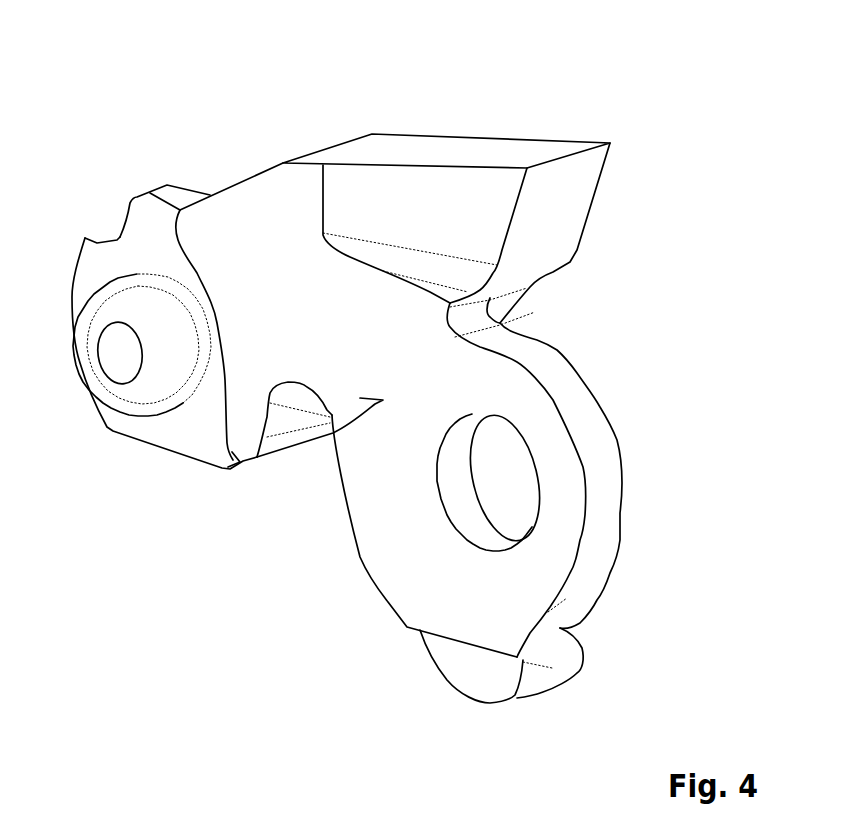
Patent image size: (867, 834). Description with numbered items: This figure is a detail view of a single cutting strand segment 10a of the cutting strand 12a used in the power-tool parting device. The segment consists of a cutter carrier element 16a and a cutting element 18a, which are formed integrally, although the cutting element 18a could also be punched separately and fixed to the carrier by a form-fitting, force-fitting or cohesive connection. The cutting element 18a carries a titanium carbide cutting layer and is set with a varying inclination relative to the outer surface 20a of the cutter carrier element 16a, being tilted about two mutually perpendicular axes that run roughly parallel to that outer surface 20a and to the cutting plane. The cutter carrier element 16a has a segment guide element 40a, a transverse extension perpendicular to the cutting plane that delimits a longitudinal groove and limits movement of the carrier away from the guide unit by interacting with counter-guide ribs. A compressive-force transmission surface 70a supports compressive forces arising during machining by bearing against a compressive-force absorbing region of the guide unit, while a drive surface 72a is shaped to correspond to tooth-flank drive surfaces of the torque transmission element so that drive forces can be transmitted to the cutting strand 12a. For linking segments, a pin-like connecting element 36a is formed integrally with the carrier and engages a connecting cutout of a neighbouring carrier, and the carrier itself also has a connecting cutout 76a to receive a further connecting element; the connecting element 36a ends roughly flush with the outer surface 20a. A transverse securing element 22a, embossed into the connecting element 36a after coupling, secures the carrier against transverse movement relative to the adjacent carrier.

The cutting strand segment 10a is at (652, 78).
The cutting strand 12a is at (110, 80).
The cutter carrier element 16a is at (270, 248).
The cutting element 18a is at (565, 195).
The outer surface 20a is at (333, 437).
The transverse securing element 22a is at (175, 408).
The connecting element 36a is at (150, 287).
The segment guide element 40a is at (560, 630).
The compressive-force transmission surface 70a is at (483, 703).
The drive surface 72a is at (360, 550).
The connecting cutout 76a is at (480, 528).